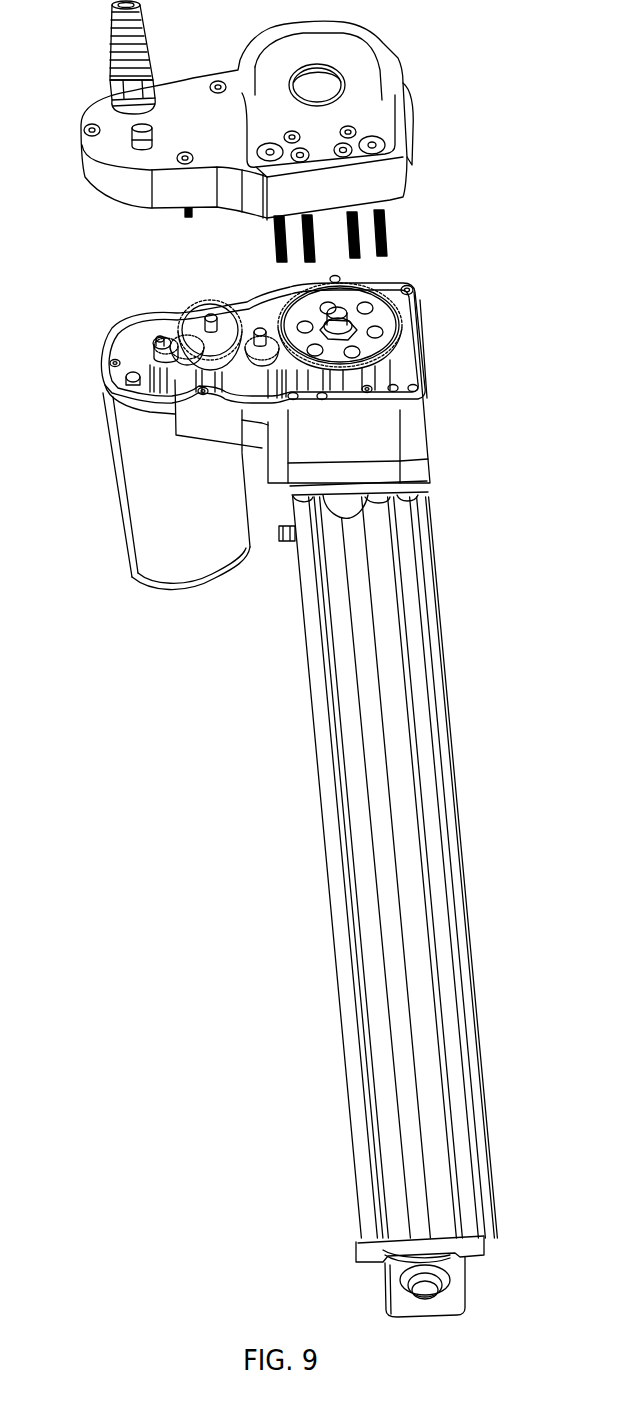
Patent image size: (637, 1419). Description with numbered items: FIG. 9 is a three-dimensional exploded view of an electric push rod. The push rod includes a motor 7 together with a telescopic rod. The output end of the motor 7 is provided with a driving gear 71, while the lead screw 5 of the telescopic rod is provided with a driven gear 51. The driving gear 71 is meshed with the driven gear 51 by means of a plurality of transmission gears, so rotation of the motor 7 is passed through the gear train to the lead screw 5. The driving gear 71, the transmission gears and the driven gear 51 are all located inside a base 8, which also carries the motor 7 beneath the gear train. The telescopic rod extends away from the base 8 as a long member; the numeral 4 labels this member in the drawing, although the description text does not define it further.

The sleeve tube 4 is at (442, 832).
The lead screw 5 is at (335, 325).
The driven gear 51 is at (380, 303).
The motor 7 is at (170, 488).
The driving gear 71 is at (117, 363).
The base 8 is at (415, 422).